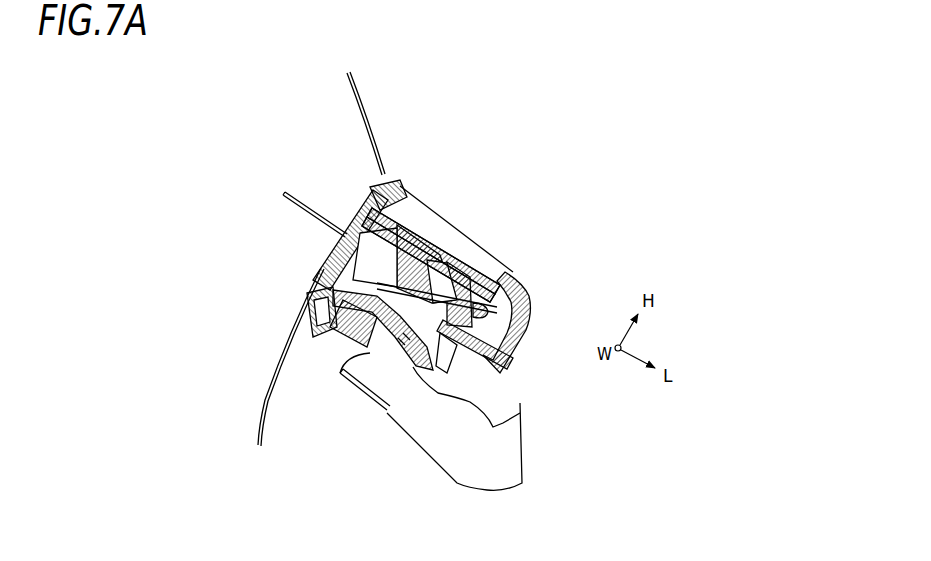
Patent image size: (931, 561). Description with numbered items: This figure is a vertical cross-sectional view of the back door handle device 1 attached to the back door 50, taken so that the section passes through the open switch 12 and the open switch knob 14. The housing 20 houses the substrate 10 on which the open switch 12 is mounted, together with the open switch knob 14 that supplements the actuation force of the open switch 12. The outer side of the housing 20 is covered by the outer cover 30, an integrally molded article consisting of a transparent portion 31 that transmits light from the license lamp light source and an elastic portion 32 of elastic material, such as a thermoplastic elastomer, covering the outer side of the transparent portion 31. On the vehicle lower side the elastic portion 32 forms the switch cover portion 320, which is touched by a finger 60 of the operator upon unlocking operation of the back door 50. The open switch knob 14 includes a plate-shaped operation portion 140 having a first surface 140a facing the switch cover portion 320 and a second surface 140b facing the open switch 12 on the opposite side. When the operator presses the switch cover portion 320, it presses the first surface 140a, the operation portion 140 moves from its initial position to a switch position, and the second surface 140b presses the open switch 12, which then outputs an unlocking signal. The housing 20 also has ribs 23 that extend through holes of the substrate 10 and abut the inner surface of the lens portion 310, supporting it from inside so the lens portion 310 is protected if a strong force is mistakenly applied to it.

The back door handle device 1 is at (523, 268).
The substrate 10 is at (487, 310).
The open switch 12 is at (350, 270).
The open switch knob 14 is at (320, 288).
The housing 20 is at (360, 220).
The ribs 23 is at (520, 334).
The outer cover 30 is at (519, 170).
The transparent portion 31 is at (433, 243).
The elastic portion 32 is at (457, 260).
The back door 50 is at (287, 342).
The finger 60 is at (480, 484).
The operation portion 140 is at (362, 376).
The first surface 140a is at (400, 340).
The second surface 140b is at (405, 335).
The lens portion 310 is at (470, 338).
The switch cover portion 320 is at (373, 338).